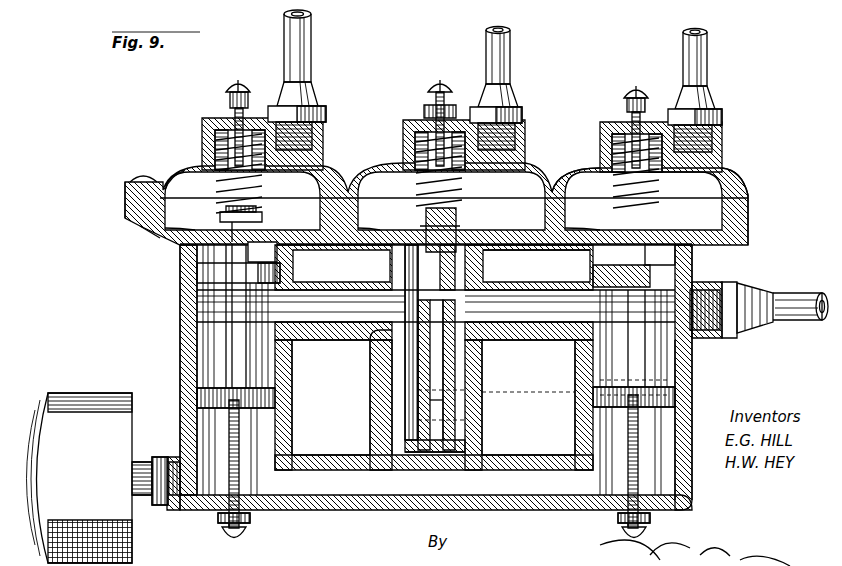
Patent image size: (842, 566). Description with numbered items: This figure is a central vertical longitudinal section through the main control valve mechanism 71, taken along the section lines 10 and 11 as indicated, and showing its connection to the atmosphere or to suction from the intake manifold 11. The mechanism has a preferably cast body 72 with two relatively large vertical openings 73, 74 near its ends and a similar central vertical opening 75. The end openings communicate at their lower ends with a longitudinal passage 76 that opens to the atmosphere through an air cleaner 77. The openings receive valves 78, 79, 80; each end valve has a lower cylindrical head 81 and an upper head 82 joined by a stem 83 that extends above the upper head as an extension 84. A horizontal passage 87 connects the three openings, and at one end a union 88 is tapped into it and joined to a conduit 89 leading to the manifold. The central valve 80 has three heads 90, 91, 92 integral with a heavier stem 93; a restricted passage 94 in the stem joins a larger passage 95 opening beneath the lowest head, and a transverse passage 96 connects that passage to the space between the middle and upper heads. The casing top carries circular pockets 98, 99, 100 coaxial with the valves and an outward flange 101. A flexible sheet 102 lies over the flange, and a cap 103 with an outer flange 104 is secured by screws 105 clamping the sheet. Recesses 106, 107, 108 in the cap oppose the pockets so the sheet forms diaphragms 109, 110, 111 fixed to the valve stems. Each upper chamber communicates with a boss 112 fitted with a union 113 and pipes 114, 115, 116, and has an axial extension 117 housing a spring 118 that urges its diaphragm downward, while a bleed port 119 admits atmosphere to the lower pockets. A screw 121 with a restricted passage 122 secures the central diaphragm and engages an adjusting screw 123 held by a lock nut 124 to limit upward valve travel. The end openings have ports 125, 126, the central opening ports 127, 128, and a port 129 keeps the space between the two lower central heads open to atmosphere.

The section line 10 is at (111, 184).
The intake manifold 11 is at (455, 50).
The main control valve mechanism 71 is at (362, 510).
The cast body 72 is at (180, 413).
The vertical opening 73 is at (208, 318).
The vertical opening 74 is at (686, 365).
The vertical opening 75 is at (408, 316).
The longitudinal passage 76 is at (337, 500).
The air cleaner 77 is at (95, 395).
The valve 78 is at (276, 392).
The valve 79 is at (658, 412).
The valve 80 is at (470, 393).
The lower cylindrical head 81 is at (200, 392).
The upper head 82 is at (197, 272).
The stem 83 is at (232, 340).
The stem extension 84 is at (248, 234).
The longitudinal passage 87 is at (436, 307).
The union 88 is at (740, 285).
The pipe or conduit 89 is at (812, 322).
The valve head 90 is at (465, 440).
The valve head 91 is at (470, 380).
The valve head 92 is at (501, 259).
The stem 93 is at (395, 380).
The restricted passage 94 is at (537, 259).
The passage 95 is at (465, 408).
The transverse passage 96 is at (470, 322).
The circular pocket 98 is at (150, 224).
The circular pocket 99 is at (569, 259).
The circular pocket 100 is at (395, 238).
The flange 101 is at (750, 224).
The flexible sheet 102 is at (750, 205).
The cap 103 is at (728, 148).
The outer flange 104 is at (128, 202).
The screws 105 is at (148, 180).
The circular recess 106 is at (182, 184).
The circular recess 107 is at (735, 185).
The circular recess 108 is at (575, 180).
The diaphragm 109 is at (198, 225).
The diaphragm 110 is at (598, 240).
The diaphragm 111 is at (385, 232).
The boss 112 is at (322, 120).
The union 113 is at (312, 96).
The pipe 114 is at (304, 33).
The pipe 115 is at (706, 43).
The pipe 116 is at (505, 43).
The axial extension 117 is at (202, 130).
The spring 118 is at (216, 142).
The bleed port 119 is at (170, 243).
The screw 121 is at (474, 212).
The restricted passage 122 is at (240, 82).
The screw 123 is at (430, 86).
The lock nut 124 is at (425, 108).
The port 125 is at (290, 380).
The port 126 is at (676, 385).
The port 127 is at (500, 370).
The port 128 is at (465, 424).
The port 129 is at (382, 413).